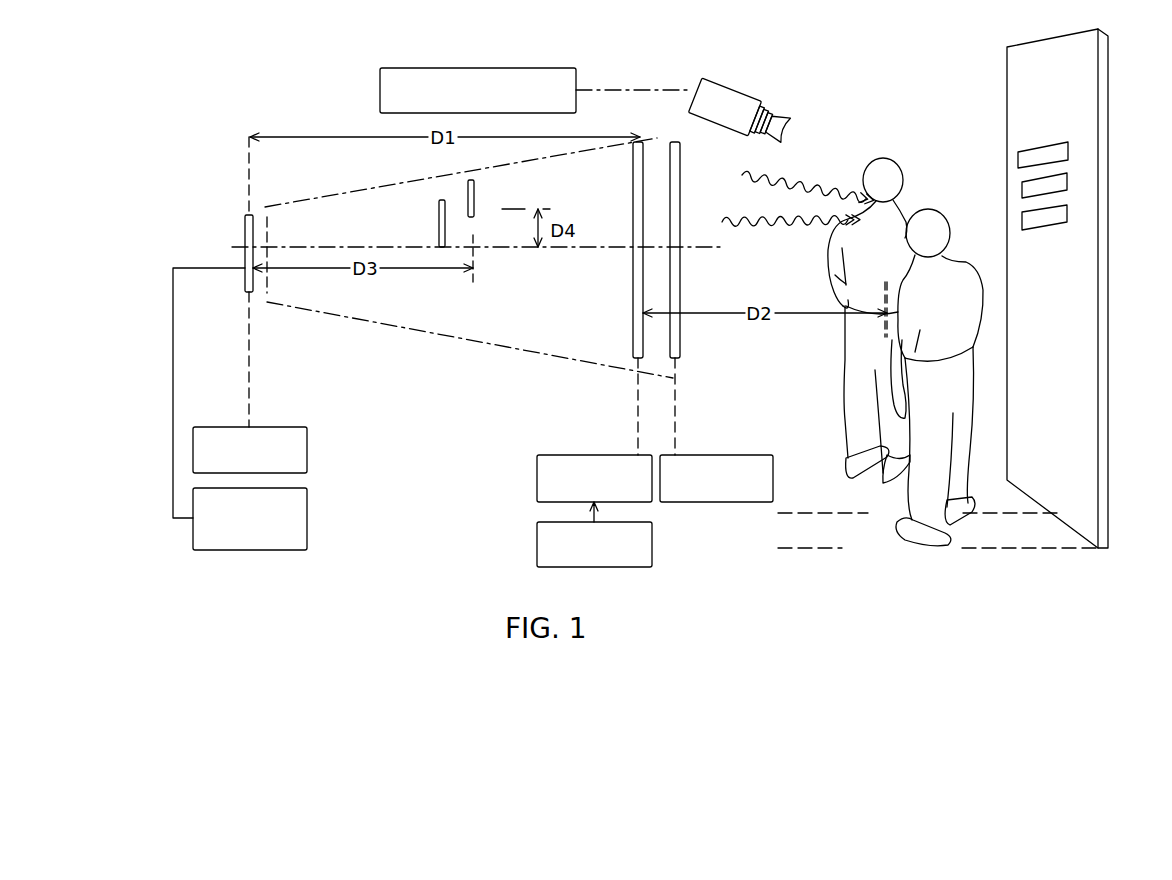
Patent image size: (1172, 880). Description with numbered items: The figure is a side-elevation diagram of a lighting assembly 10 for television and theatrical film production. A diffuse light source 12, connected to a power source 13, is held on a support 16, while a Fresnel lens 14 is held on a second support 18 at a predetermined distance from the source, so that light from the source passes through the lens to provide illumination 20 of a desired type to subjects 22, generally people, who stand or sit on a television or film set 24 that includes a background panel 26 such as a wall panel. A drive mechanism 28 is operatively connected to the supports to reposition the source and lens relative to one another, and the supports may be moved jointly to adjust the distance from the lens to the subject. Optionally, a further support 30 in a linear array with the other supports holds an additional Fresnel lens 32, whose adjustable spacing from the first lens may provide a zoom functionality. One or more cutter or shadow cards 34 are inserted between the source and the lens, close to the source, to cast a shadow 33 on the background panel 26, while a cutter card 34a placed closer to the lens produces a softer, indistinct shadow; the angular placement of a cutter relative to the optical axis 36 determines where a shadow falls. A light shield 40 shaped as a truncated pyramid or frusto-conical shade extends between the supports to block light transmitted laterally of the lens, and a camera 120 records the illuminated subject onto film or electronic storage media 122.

The lighting assembly 10 is at (257, 110).
The diffuse light source 12 is at (245, 229).
The power source 13 is at (307, 508).
The Fresnel lens 14 is at (633, 322).
The support 16 is at (283, 427).
The support 18 is at (595, 455).
The illumination 20 is at (829, 186).
The subjects 22 is at (927, 208).
The television or film set 24 is at (1003, 435).
The background panel 26 is at (1078, 113).
The drive mechanism 28 is at (537, 546).
The additional support 30 is at (717, 502).
The additional Fresnel lens 32 is at (682, 349).
The shadow 33 is at (1068, 210).
The cutter or shadow card 34 is at (267, 227).
The cutter card 34a is at (469, 187).
The optical axis 36 is at (602, 250).
The light shield 40 is at (363, 324).
The camera 120 is at (745, 97).
The film or electronic storage media 122 is at (380, 91).